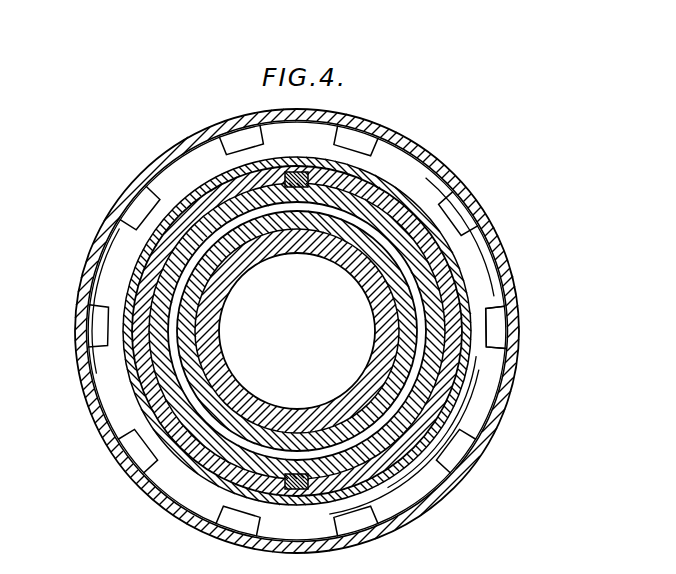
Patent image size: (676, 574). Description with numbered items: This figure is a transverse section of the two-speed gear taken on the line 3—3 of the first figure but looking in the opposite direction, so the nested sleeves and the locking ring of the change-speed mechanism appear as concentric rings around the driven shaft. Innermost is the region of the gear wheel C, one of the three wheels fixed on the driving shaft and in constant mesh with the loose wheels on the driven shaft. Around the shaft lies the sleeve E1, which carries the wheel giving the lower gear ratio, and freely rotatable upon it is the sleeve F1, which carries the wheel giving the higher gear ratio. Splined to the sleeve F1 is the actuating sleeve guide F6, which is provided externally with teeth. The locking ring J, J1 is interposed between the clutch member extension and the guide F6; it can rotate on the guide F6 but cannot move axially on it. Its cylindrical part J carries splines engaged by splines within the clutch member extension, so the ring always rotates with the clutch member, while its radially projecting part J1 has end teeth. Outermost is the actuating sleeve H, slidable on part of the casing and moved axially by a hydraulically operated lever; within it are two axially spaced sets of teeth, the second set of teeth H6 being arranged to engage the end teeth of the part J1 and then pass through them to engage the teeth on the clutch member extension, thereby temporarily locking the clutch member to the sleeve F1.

The actuating sleeve H is at (273, 547).
The radially projecting part of the locking ring J1 is at (393, 158).
The second set of teeth H6 is at (498, 326).
The section line 3 is at (415, 497).
The actuating sleeve guide F6 is at (432, 251).
The sleeve F1 is at (400, 220).
The cylindrical part of the locking ring J is at (383, 218).
The sleeve E1 is at (346, 260).
The gear wheel C is at (297, 245).